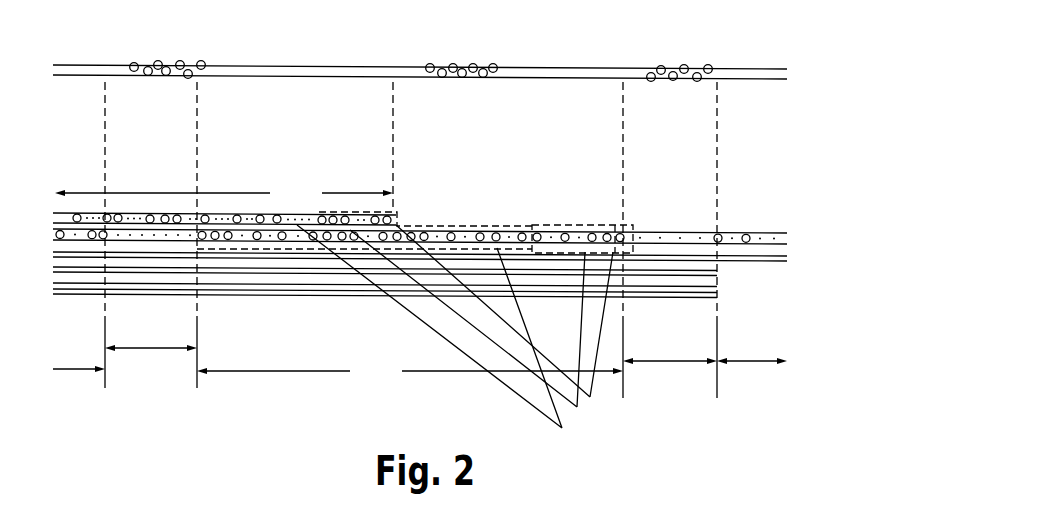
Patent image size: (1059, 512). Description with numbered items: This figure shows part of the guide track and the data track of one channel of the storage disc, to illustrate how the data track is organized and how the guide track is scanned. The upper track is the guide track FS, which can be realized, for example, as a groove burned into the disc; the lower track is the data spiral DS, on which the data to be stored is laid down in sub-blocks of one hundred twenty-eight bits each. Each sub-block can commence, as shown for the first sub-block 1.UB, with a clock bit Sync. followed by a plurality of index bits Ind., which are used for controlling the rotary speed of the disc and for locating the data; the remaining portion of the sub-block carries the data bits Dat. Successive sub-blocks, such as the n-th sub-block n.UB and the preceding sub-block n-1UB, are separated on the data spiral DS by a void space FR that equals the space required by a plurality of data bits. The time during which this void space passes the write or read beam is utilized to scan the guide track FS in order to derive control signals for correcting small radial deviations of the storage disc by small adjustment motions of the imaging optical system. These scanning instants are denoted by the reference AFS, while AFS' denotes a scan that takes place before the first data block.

The guide track FS is at (742, 77).
The scanning instants AFS is at (421, 42).
The scan before the first data block AFS' is at (462, 40).
The data spiral DS is at (753, 237).
The first sub-block 1.UB is at (224, 193).
The n-th sub-block n.UB is at (410, 371).
The (n-1)-th sub-block n-1UB is at (752, 349).
The void space FR is at (411, 343).
The clock bit Sync. is at (590, 397).
The index bits Ind. is at (577, 407).
The data word Dat. is at (562, 428).